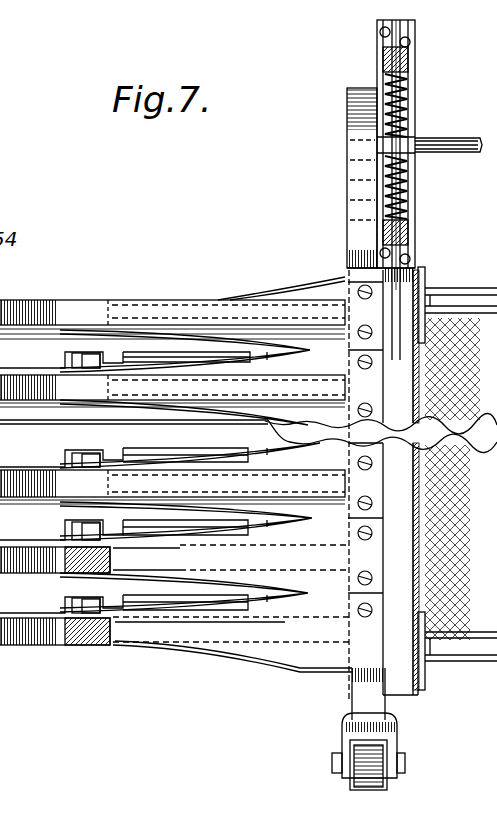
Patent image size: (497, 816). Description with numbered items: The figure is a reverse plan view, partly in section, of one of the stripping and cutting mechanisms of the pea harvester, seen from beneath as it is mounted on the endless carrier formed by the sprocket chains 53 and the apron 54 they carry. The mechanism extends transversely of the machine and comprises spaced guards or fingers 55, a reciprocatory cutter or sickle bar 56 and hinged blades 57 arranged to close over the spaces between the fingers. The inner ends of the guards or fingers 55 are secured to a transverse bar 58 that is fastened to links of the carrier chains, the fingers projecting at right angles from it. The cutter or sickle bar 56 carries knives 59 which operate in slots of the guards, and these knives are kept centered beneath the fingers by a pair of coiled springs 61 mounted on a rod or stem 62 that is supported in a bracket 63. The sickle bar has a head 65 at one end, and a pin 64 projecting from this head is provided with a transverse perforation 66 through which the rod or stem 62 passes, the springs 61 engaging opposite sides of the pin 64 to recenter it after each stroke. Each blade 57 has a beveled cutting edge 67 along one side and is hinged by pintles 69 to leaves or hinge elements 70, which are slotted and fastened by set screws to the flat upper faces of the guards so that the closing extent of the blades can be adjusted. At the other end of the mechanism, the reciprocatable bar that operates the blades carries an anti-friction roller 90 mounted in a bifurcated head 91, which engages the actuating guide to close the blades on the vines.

The endless sprocket chains 53 is at (470, 290).
The apron 54 is at (421, 383).
The guards or fingers 55 is at (92, 308).
The cutter or sickle bar 56 is at (352, 272).
The hinged blades 57 is at (61, 476).
The transverse bar 58 is at (408, 688).
The knives 59 is at (287, 291).
The coiled springs 61 is at (410, 83).
The rod or stem 62 is at (415, 49).
The bracket 63 is at (412, 120).
The pin 64 is at (446, 150).
The head 65 is at (356, 115).
The transverse perforation 66 is at (470, 131).
The beveled cutting edge 67 is at (81, 425).
The pintles 69 is at (193, 347).
The hinge elements or leaves 70 is at (88, 540).
The roller 90 is at (388, 747).
The bifurcated head 91 is at (395, 728).